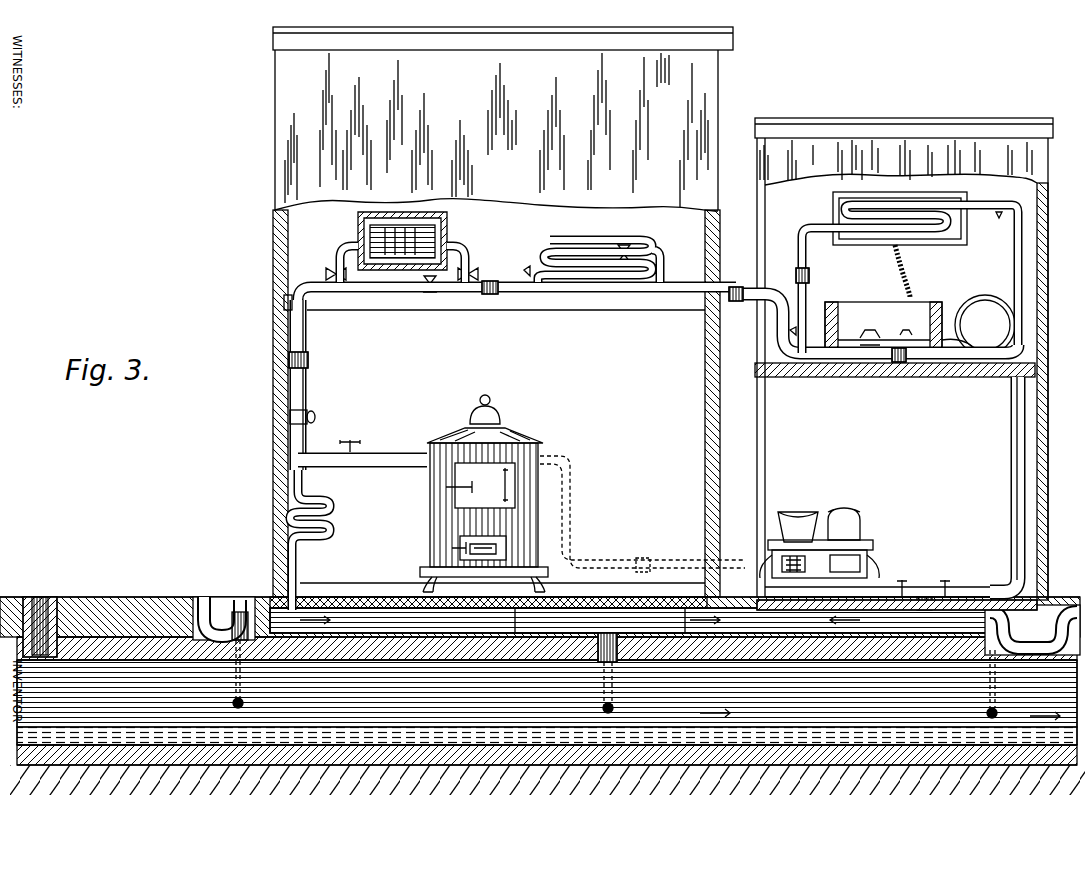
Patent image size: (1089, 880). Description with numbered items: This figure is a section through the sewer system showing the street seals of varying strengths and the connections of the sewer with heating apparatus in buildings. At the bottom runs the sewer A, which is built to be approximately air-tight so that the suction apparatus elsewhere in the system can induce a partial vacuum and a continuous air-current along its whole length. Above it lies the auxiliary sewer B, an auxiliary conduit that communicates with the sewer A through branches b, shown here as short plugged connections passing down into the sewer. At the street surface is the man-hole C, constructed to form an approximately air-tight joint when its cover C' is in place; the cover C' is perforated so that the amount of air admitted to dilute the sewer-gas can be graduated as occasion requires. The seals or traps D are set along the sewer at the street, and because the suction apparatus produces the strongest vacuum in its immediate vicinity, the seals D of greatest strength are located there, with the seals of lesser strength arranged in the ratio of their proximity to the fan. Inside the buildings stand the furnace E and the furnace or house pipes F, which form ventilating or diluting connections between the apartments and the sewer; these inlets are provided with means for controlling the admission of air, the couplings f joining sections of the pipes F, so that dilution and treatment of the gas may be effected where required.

The sewer A is at (547, 702).
The auxiliary sewer B is at (342, 600).
The branches b is at (617, 673).
The man-hole C is at (540, 605).
The cover C' is at (39, 615).
The seals or traps D is at (207, 606).
The furnace E is at (502, 412).
The furnace or house pipes F is at (335, 328).
The coupling f is at (308, 366).